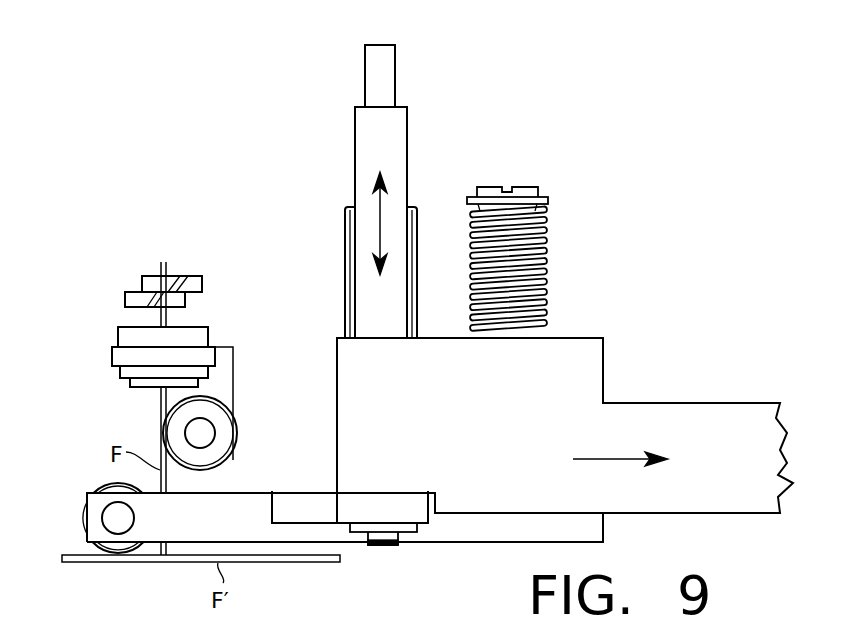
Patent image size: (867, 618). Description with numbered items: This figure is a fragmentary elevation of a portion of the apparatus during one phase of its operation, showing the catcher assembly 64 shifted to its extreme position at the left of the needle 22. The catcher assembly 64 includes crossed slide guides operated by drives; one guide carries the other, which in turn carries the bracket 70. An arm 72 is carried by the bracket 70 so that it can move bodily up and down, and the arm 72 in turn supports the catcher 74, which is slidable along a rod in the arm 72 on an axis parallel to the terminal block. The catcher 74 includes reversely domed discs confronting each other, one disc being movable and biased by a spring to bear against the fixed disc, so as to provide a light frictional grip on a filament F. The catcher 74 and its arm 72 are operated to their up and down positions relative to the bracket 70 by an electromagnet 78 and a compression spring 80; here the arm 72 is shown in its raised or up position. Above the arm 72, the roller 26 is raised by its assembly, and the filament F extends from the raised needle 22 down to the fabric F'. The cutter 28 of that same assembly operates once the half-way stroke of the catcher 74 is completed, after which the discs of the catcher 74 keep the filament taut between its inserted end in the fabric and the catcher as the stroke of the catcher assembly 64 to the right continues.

The needle 22 is at (160, 402).
The roller 26 is at (217, 393).
The cutter 28 is at (202, 283).
The catcher assembly 64 is at (432, 165).
The bracket 70 is at (479, 424).
The arm 72 is at (228, 527).
The catcher 74 is at (100, 478).
The electromagnet 78 is at (355, 161).
The compression spring 80 is at (547, 263).